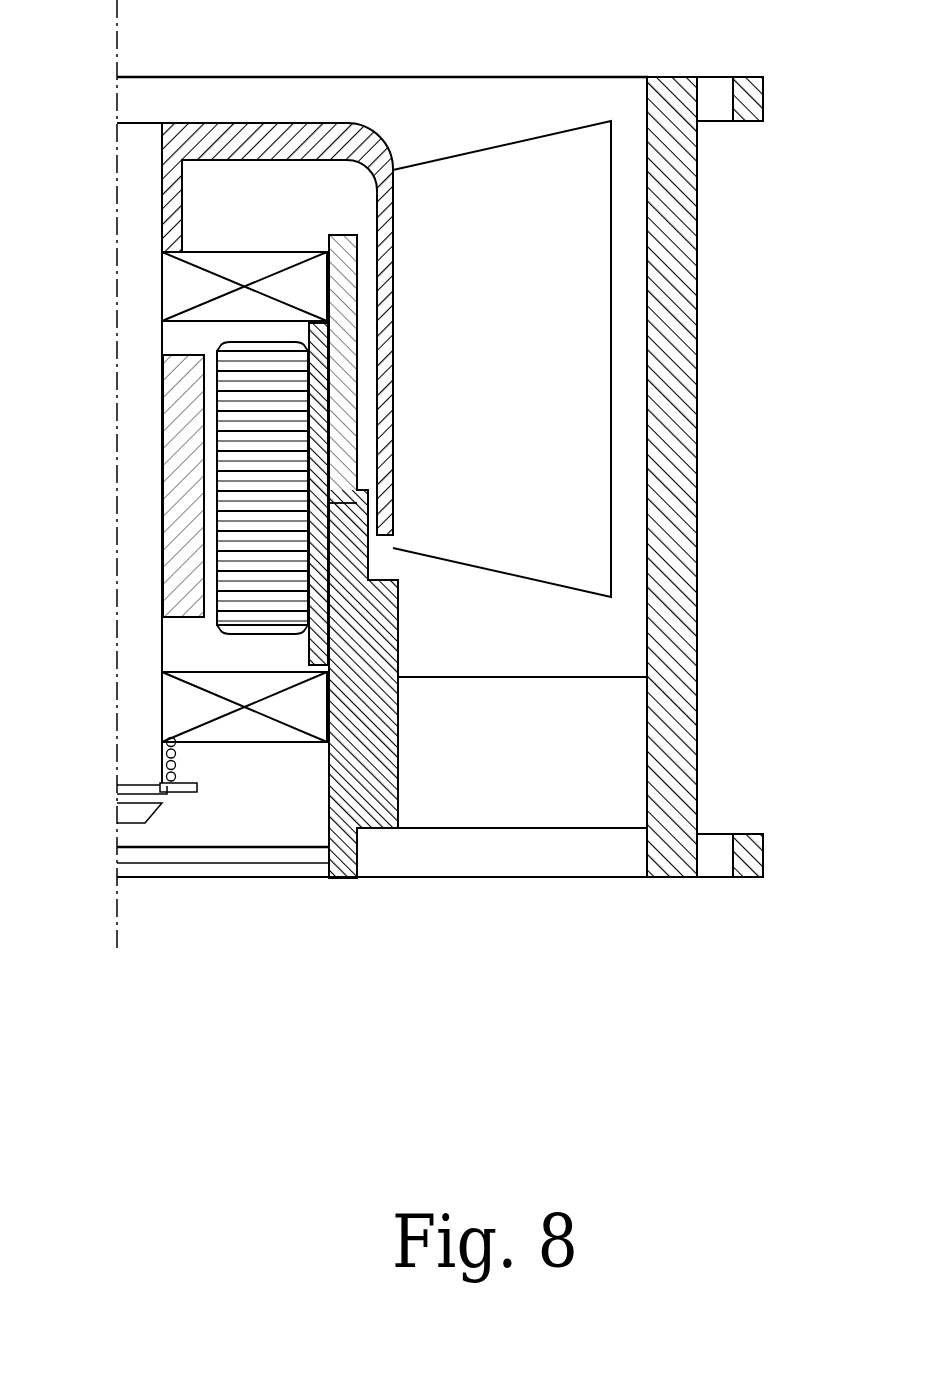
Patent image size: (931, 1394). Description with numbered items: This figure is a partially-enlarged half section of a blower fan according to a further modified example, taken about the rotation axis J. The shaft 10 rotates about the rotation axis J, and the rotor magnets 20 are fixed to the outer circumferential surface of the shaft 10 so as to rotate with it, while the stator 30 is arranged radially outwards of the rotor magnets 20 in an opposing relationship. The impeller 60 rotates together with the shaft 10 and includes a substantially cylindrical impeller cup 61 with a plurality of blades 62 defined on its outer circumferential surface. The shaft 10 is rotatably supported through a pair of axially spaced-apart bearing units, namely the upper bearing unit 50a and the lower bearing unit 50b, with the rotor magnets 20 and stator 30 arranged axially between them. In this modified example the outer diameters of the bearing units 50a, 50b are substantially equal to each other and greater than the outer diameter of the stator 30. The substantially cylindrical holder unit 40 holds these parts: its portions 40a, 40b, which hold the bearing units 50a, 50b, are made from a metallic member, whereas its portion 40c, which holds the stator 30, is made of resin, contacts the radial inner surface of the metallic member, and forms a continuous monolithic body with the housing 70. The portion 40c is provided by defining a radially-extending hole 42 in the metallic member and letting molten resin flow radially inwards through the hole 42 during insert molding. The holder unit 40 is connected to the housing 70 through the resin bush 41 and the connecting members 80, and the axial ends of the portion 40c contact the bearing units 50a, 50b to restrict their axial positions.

The rotation axis J is at (121, 33).
The shaft 10 is at (139, 160).
The rotor magnets 20 is at (180, 453).
The stator 30 is at (260, 527).
The radially-extending hole 42 is at (347, 505).
The upper bearing unit 50a is at (259, 265).
The lower bearing unit 50b is at (217, 730).
The impeller 60 is at (386, 298).
The impeller cup 61 is at (352, 137).
The blades 62 is at (443, 180).
The housing 70 is at (680, 297).
The holder unit 40 is at (579, 556).
The portion of the holder unit arranged to hold the upper bearing unit 40a is at (340, 283).
The portion of the holder unit arranged to hold the lower bearing unit 40b is at (340, 710).
The portion of the holder unit arranged to hold the stator 40c is at (322, 457).
The resin bush 41 is at (383, 735).
The connecting members 80 is at (500, 778).